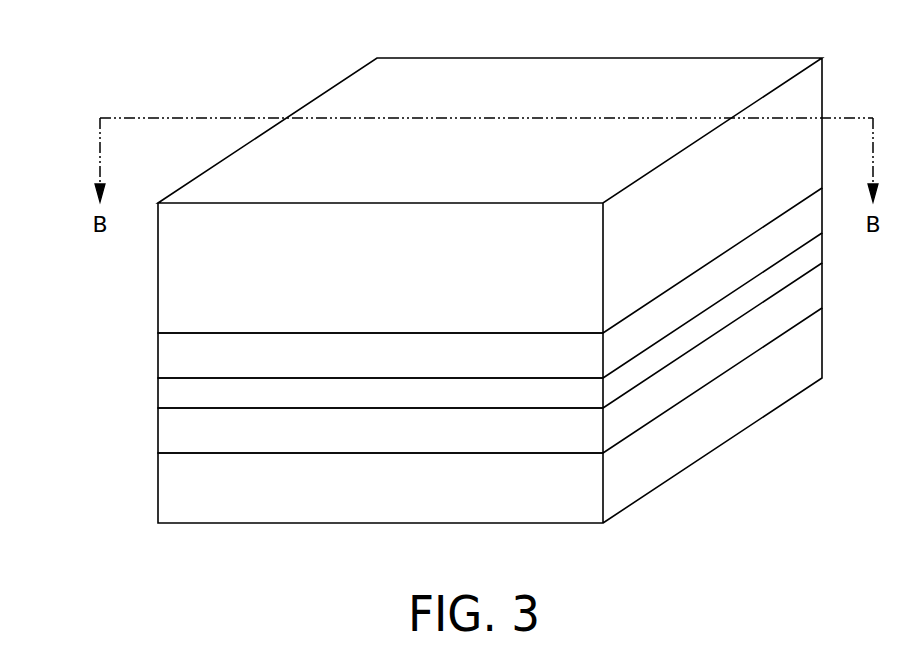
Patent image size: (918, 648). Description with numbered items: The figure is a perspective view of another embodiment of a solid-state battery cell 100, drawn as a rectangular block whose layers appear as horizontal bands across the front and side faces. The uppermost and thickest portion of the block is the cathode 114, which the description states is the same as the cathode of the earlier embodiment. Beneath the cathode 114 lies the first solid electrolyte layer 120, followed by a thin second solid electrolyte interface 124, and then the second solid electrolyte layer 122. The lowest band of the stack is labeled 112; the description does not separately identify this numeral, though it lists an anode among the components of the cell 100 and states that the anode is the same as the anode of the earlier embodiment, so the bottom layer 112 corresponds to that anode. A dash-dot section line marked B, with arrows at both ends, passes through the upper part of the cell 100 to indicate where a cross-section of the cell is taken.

The solid-state battery cell 100 is at (463, 270).
The substrate / bottom layer 112 is at (822, 343).
The cathode 114 is at (822, 95).
The first solid electrolyte layer 120 is at (158, 347).
The second solid electrolyte layer 122 is at (158, 440).
The second solid electrolyte interface 124 is at (158, 391).